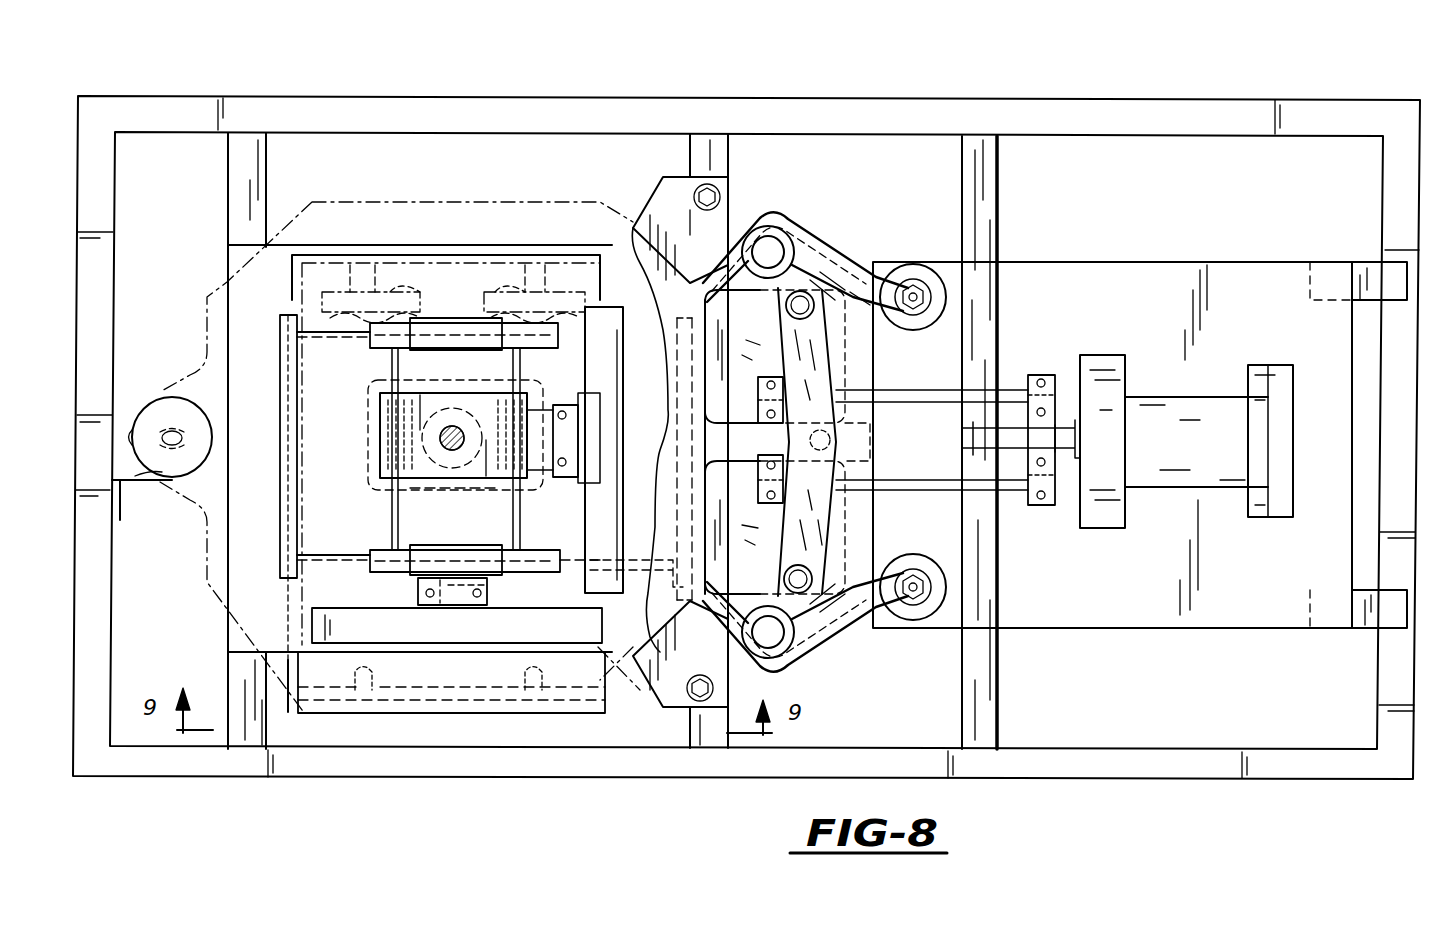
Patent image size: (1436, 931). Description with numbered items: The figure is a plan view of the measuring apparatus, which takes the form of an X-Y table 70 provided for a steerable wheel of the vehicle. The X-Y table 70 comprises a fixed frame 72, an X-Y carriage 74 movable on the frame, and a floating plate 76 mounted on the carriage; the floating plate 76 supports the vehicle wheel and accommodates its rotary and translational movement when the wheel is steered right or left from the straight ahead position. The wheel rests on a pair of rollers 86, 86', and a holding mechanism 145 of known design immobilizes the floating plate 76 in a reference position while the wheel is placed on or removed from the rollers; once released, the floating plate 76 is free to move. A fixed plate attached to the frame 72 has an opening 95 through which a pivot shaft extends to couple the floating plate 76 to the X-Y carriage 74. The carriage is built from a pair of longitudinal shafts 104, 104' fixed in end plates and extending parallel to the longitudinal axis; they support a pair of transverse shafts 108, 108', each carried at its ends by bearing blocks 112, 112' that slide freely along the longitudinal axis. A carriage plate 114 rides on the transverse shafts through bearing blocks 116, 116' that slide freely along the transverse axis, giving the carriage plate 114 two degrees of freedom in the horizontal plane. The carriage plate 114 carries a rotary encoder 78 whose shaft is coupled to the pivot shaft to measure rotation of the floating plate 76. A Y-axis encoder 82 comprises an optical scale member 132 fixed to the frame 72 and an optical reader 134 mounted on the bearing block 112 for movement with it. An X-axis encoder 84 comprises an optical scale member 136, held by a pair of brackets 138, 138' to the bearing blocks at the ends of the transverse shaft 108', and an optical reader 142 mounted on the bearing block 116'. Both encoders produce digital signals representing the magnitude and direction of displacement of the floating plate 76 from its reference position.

The X-Y table 70 is at (782, 98).
The fixed frame 72 is at (1150, 99).
The X-Y carriage 74 is at (468, 478).
The floating plate 76 is at (633, 228).
The rotary encoder 78 is at (430, 375).
The Y-axis encoder 82 is at (503, 596).
The X-axis encoder 84 is at (565, 392).
The roller 86 is at (395, 217).
The roller 86' is at (502, 217).
The opening 95 is at (372, 440).
The longitudinal shaft 104 is at (420, 479).
The longitudinal shaft 104' is at (400, 458).
The transverse shaft 108 is at (427, 415).
The transverse shaft 108' is at (448, 550).
The bearing block 112 is at (396, 626).
The bearing block 112' is at (395, 246).
The carriage plate 114 is at (392, 380).
The bearing block 116 is at (412, 449).
The bearing block 116' is at (736, 437).
The optical scale member 132 is at (478, 641).
The optical reader 134 is at (418, 594).
The optical scale member 136 is at (608, 387).
The bracket 138 is at (604, 486).
The bracket 138' is at (534, 250).
The optical reader 142 is at (570, 478).
The holding mechanism 145 is at (876, 250).